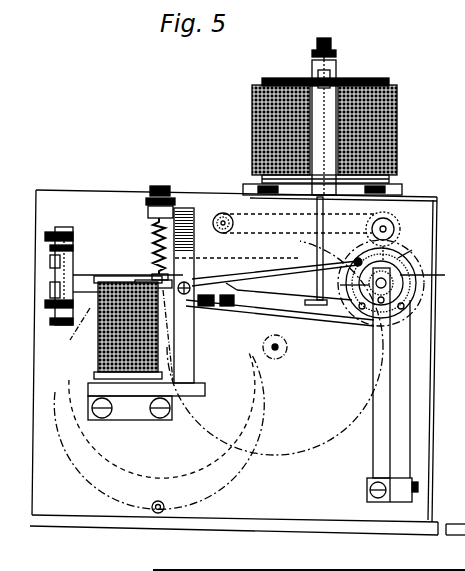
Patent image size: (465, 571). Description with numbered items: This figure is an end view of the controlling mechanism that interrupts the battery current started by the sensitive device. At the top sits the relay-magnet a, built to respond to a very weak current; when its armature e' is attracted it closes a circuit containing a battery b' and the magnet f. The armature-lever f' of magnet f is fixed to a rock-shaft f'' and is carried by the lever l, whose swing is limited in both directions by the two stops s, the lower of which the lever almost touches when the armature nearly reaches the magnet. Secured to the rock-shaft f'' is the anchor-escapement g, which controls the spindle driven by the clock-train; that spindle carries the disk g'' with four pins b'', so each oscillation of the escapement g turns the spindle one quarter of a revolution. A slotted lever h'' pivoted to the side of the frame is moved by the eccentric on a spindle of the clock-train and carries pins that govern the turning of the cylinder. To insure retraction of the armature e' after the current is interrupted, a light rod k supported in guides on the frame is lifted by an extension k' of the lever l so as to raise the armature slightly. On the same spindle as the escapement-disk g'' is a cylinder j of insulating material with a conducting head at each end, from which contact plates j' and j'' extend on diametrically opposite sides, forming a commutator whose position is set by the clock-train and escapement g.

The relay-magnet a is at (329, 136).
The armature e' is at (338, 171).
The stops s is at (60, 270).
The lever l is at (128, 275).
The armature-lever f' is at (144, 237).
The magnet f is at (142, 348).
The rock-shaft f'' is at (193, 295).
The lever h'' is at (275, 231).
The light rod k is at (351, 237).
The anchor-escapement g is at (280, 296).
The extension k' is at (289, 290).
The pins b'' is at (402, 288).
The disk g'' is at (417, 244).
The contact plate j'' is at (429, 275).
The cylinder j is at (347, 278).
The battery b' is at (375, 283).
The contact plate j' is at (388, 385).